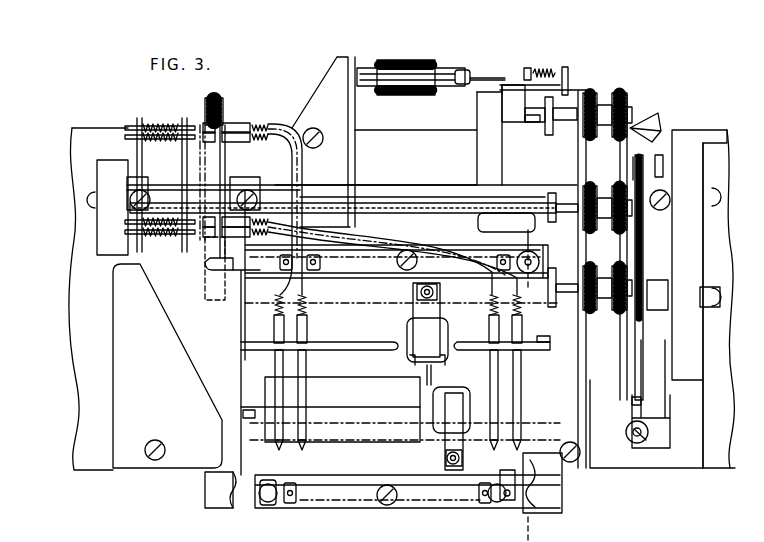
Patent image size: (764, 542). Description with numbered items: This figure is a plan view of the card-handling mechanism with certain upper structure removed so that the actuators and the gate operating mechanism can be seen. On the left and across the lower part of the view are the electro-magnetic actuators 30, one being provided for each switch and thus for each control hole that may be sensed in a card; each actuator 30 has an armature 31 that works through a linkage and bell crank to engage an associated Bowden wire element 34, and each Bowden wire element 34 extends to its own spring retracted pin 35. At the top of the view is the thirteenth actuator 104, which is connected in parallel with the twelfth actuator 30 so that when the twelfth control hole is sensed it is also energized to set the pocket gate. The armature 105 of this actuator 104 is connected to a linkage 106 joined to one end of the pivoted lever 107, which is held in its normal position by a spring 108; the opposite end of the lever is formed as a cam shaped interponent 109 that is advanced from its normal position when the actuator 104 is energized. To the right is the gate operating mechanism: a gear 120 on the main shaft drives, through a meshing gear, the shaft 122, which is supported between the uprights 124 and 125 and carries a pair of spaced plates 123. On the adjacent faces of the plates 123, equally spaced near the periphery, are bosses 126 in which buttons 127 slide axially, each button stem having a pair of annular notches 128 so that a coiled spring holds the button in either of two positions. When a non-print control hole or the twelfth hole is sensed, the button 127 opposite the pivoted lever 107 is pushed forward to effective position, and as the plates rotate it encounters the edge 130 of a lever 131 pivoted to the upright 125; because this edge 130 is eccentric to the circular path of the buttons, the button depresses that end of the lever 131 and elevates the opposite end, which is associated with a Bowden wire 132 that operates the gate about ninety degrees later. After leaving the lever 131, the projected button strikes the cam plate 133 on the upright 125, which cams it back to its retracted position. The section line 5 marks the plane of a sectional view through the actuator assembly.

The section line 5- 5 is at (523, 240).
The electro-magnetic actuator 30 is at (407, 333).
The armature 31 is at (413, 303).
The Bowden wire element 34 is at (283, 452).
The spring retracted pin 35 is at (135, 137).
The thirteenth actuator 104 is at (428, 50).
The armature 105 is at (447, 72).
The linkage 106 is at (512, 85).
The pivoted lever 107 is at (498, 96).
The spring 108 is at (545, 70).
The cam shaped interponent 109 is at (522, 122).
The gear 120 is at (222, 102).
The shaft 122 is at (392, 200).
The spaced plates 123 is at (580, 90).
The upright 124 is at (102, 240).
The upright 125 is at (692, 236).
The bosses 126 is at (615, 106).
The buttons 127 is at (543, 130).
The annular notches 128 is at (600, 215).
The edge 130 is at (643, 240).
The lever 131 is at (638, 373).
The Bowden wire 132 is at (637, 443).
The cam plate 133 is at (660, 120).